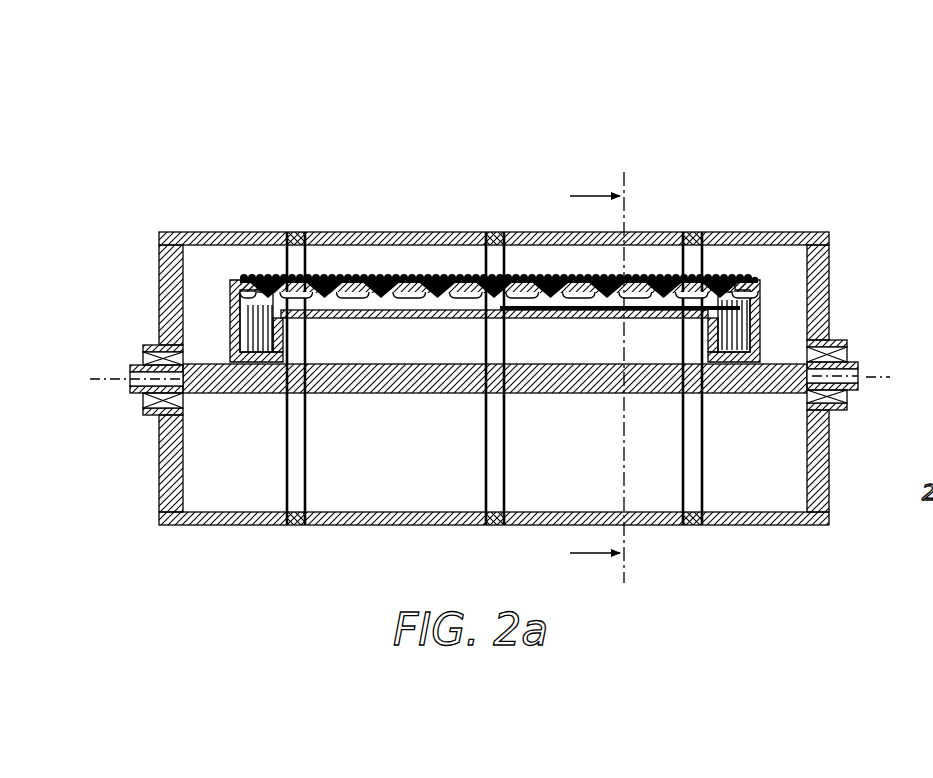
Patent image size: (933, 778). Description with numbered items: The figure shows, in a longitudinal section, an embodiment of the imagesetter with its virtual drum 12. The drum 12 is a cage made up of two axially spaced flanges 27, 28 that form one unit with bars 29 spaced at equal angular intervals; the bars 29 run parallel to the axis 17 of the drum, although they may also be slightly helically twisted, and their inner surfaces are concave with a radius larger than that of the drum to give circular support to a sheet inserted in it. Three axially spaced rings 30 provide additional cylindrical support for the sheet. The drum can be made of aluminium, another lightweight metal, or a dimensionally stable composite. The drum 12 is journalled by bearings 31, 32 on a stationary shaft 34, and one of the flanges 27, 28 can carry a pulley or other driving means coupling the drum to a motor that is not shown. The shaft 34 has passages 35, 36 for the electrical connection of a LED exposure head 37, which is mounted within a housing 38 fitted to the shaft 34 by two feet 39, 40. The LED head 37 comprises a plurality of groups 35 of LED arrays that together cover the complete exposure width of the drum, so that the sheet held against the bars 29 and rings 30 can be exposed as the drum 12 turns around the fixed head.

The virtual drum 12 is at (497, 309).
The axis of the drum 17 is at (883, 378).
The flange 27 is at (160, 297).
The flange 28 is at (820, 282).
The bars 29 is at (496, 336).
The rings 30 is at (493, 231).
The bearing 31 is at (143, 358).
The bearing 32 is at (845, 352).
The stationary shaft 34 is at (430, 380).
The passage 35 is at (130, 392).
The passage 36 is at (860, 376).
The LED exposure head 37 is at (526, 262).
The housing 38 is at (595, 318).
The foot 39 is at (283, 333).
The foot 40 is at (708, 341).